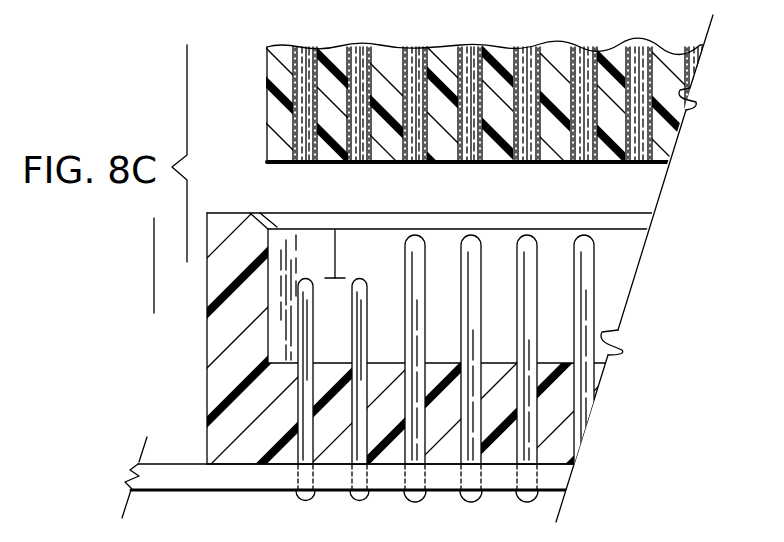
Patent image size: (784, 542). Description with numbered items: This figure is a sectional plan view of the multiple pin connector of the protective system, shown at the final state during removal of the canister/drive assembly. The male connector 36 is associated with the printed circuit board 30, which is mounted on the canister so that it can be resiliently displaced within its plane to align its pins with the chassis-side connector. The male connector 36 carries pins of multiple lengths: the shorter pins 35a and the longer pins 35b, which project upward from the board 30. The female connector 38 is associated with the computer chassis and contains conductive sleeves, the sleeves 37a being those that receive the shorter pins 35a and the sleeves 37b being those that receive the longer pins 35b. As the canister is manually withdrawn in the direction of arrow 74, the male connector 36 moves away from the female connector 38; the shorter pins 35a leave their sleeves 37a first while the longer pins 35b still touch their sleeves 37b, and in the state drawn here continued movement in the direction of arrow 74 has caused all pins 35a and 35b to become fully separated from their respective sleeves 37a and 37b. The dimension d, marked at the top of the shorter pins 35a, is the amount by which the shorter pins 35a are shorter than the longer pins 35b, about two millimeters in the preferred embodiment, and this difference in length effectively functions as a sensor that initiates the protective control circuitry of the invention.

The printed circuit board 30 is at (168, 482).
The shorter pins 35a is at (360, 309).
The longer pins 35b is at (583, 236).
The male connector 36 is at (208, 387).
The conductive sleeves 37a is at (363, 47).
The conductive sleeves 37b is at (476, 44).
The female connector 38 is at (273, 107).
The arrow 74 is at (152, 262).
The dimension d is at (336, 262).